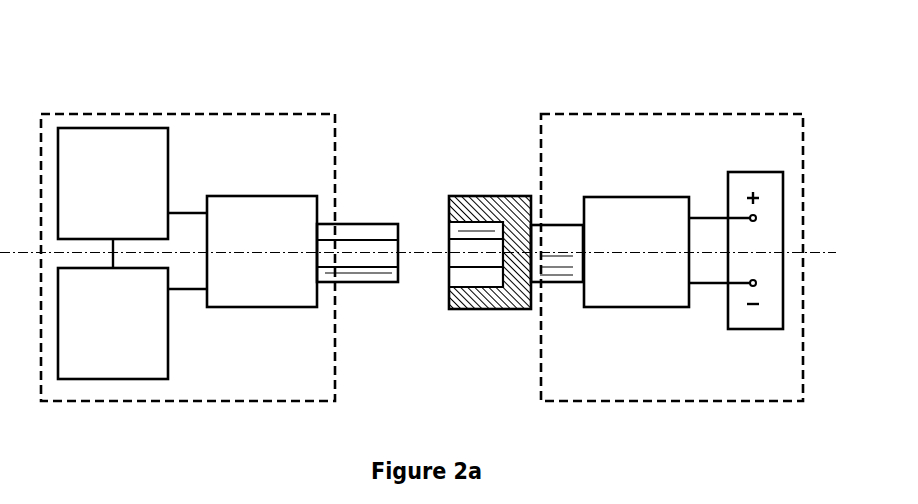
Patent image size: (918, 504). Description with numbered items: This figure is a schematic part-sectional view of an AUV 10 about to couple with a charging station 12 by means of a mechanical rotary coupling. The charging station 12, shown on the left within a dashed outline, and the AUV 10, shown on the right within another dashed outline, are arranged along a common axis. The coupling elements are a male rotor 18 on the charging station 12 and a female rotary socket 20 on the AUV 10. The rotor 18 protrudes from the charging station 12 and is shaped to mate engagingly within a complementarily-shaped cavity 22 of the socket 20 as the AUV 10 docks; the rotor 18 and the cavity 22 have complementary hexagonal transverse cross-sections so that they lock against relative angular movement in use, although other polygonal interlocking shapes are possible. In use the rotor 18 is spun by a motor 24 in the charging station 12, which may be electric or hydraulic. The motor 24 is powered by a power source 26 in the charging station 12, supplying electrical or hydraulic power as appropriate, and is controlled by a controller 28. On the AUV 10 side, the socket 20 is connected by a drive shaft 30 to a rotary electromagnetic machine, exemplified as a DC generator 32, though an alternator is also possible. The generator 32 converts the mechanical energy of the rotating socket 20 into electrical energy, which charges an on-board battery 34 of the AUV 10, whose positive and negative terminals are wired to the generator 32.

The AUV 10 is at (769, 109).
The charging station 12 is at (132, 112).
The male rotor 18 is at (361, 232).
The female rotary socket 20 is at (482, 297).
The cavity 22 is at (471, 245).
The motor 24 is at (262, 251).
The power source 26 is at (113, 183).
The controller 28 is at (113, 323).
The drive shaft 30 is at (557, 237).
The DC generator 32 is at (636, 252).
The on-board battery 34 is at (775, 310).